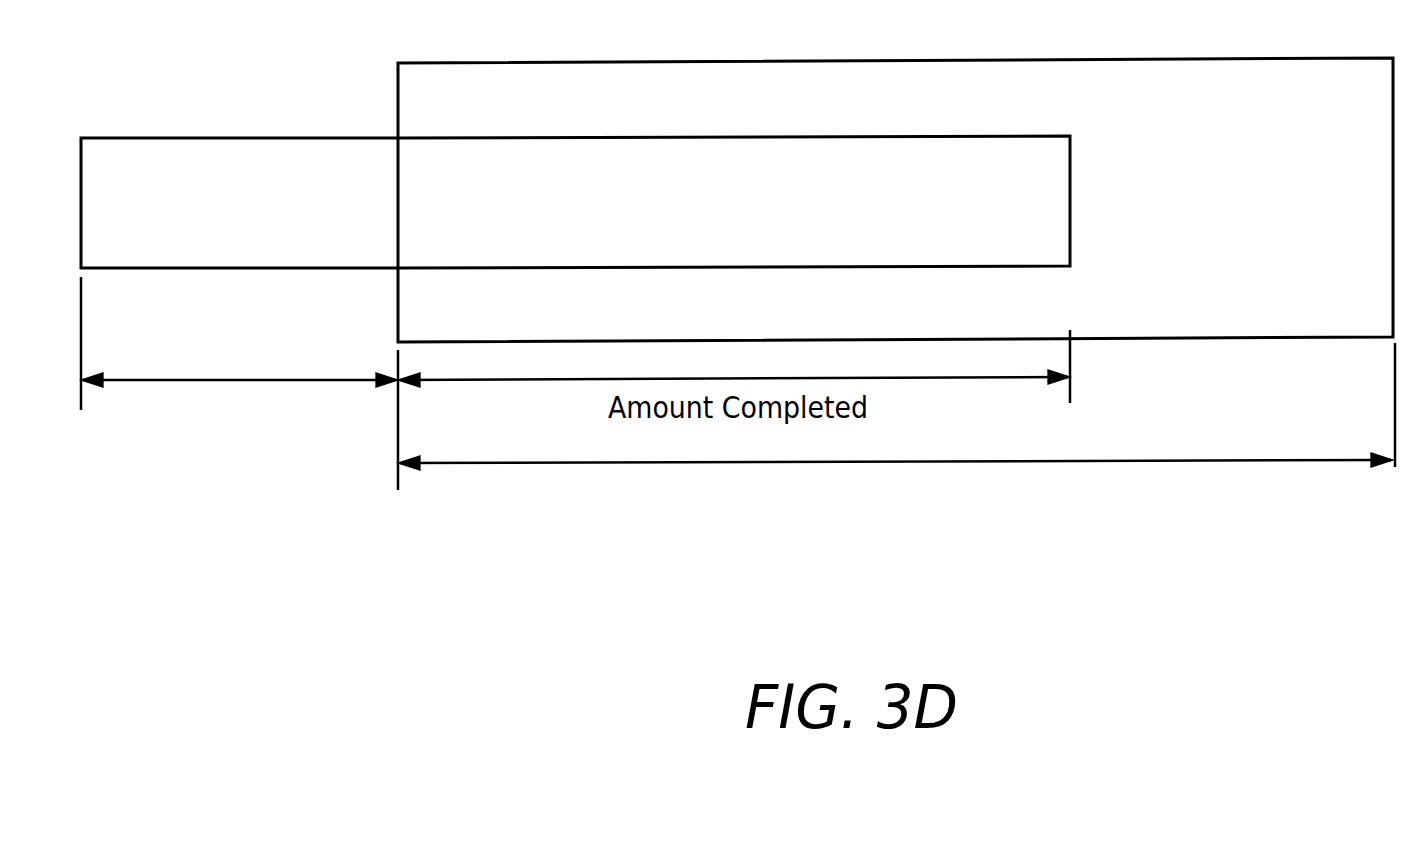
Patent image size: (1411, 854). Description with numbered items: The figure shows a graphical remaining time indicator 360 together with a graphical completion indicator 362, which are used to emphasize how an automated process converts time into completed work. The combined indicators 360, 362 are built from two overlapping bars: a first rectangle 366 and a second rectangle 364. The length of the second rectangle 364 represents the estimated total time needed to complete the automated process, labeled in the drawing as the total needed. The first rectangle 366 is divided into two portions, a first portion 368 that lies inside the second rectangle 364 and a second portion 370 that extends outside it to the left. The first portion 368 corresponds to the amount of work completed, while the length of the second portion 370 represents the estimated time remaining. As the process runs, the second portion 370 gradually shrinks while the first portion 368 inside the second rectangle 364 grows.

The graphical remaining time indicator 360 is at (170, 449).
The graphical completion indicator 362 is at (943, 423).
The second rectangle 364 is at (807, 62).
The first rectangle 366 is at (1103, 128).
The first portion 368 is at (592, 137).
The second portion 370 is at (193, 138).